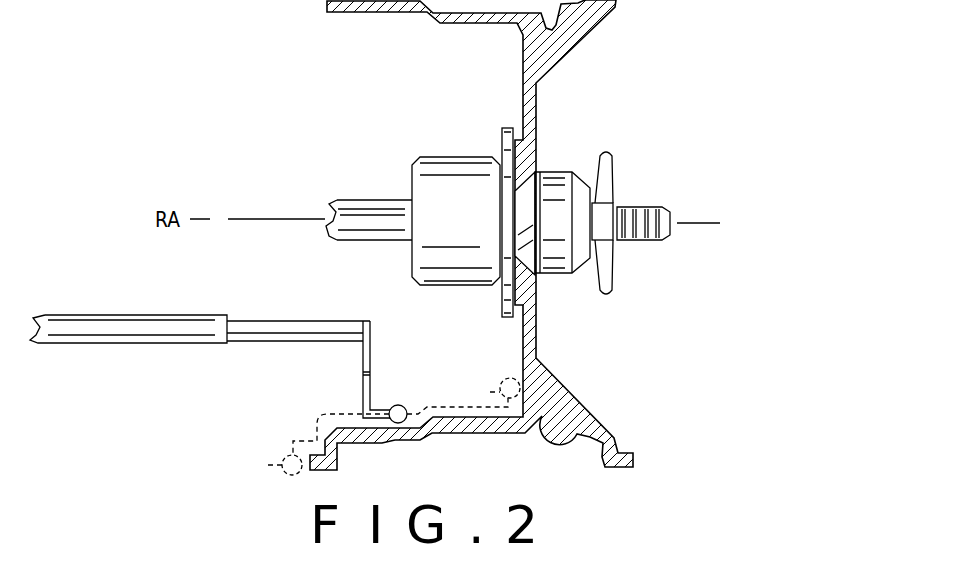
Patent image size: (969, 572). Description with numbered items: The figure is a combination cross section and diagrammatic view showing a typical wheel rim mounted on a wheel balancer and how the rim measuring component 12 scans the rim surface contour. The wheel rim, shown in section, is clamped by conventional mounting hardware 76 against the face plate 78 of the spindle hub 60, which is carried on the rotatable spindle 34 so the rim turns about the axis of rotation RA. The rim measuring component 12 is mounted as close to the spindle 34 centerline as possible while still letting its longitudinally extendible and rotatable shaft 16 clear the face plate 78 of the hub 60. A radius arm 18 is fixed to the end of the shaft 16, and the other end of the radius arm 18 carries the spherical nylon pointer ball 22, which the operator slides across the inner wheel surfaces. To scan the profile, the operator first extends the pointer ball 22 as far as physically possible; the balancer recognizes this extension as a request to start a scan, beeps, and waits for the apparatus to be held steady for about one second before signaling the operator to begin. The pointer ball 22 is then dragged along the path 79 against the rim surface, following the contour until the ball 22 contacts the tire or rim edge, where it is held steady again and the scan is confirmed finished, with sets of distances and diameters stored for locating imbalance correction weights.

The rim measuring component 12 is at (226, 368).
The shaft 16 is at (335, 343).
The radius arm 18 is at (371, 362).
The pointer ball 22 is at (399, 404).
The spindle 34 is at (362, 199).
The spindle hub 60 is at (453, 156).
The mounting hardware 76 is at (590, 142).
The face plate 78 is at (507, 127).
The path 79 is at (482, 405).